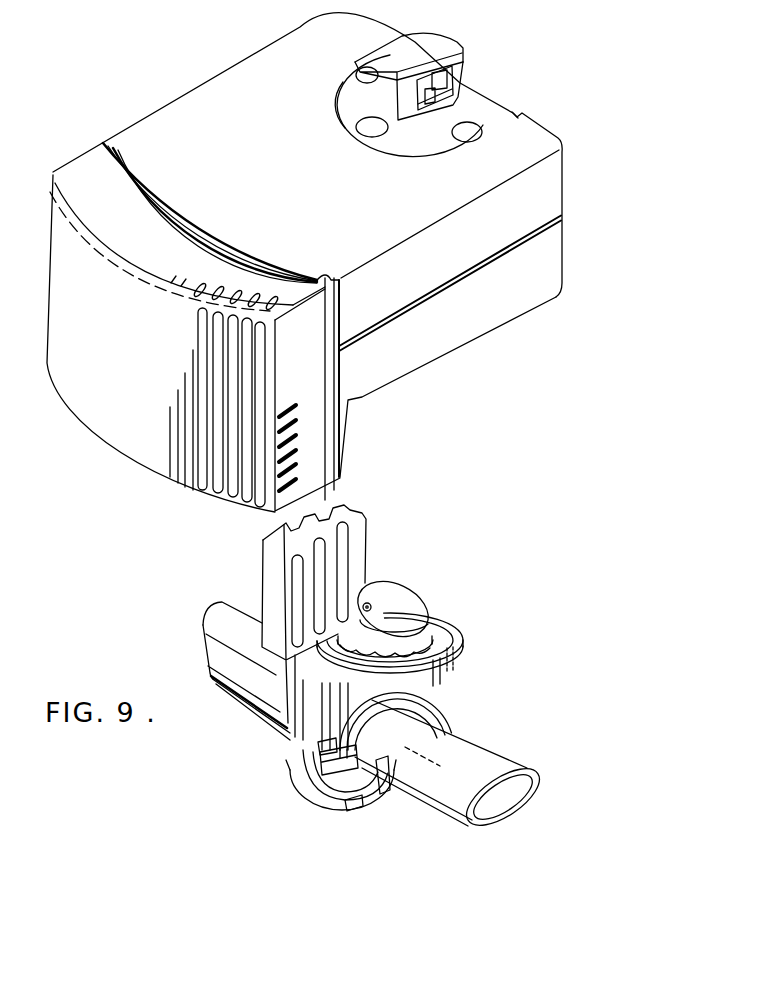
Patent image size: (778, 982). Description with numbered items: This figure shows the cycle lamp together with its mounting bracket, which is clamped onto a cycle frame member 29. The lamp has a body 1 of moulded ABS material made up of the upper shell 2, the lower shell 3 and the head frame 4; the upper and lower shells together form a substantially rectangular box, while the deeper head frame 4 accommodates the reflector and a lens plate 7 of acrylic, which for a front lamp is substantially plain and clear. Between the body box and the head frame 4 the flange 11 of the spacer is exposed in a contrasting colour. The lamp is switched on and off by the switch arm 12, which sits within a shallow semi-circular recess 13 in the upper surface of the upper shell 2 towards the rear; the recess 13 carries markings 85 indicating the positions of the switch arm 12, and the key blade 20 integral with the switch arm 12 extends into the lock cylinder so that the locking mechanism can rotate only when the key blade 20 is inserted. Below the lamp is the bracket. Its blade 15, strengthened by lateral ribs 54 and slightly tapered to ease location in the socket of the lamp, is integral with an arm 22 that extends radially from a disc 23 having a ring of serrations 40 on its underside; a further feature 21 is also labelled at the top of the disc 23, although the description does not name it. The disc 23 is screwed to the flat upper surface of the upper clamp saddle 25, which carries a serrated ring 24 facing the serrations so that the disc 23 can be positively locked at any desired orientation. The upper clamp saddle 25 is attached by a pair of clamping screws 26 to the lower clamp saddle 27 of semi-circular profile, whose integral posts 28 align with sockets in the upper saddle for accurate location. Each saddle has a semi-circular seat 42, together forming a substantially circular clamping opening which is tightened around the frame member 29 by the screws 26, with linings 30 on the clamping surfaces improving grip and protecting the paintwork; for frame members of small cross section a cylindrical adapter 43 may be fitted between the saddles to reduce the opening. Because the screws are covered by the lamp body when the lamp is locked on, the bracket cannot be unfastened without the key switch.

The body 1 is at (571, 233).
The upper shell 2 is at (558, 142).
The lower shell 3 is at (543, 288).
The head frame 4 is at (88, 162).
The lens plate 7 is at (110, 430).
The flange 11 is at (107, 137).
The switch arm 12 is at (440, 42).
The recess 13 is at (511, 112).
The blade 15 is at (256, 570).
The key blade 20 is at (433, 106).
The rotary knob 21 is at (372, 603).
The arm 22 is at (323, 680).
The disc 23 is at (405, 602).
The serrated ring 24 is at (392, 598).
The upper clamp saddle 25 is at (472, 634).
The clamping screws 26 is at (313, 754).
The lower clamp saddle 27 is at (310, 830).
The posts 28 is at (450, 704).
The cycle frame member 29 is at (480, 760).
The linings 30 is at (347, 803).
The ring of serrations 40 is at (428, 603).
The semi-circular seat 42 is at (323, 761).
The cylindrical adapter 43 is at (381, 771).
The lateral ribs 54 is at (335, 553).
The markings 85 is at (371, 126).